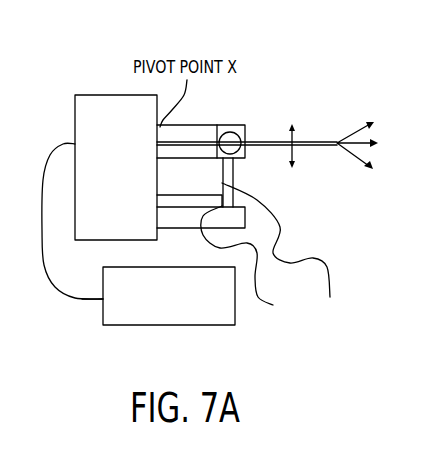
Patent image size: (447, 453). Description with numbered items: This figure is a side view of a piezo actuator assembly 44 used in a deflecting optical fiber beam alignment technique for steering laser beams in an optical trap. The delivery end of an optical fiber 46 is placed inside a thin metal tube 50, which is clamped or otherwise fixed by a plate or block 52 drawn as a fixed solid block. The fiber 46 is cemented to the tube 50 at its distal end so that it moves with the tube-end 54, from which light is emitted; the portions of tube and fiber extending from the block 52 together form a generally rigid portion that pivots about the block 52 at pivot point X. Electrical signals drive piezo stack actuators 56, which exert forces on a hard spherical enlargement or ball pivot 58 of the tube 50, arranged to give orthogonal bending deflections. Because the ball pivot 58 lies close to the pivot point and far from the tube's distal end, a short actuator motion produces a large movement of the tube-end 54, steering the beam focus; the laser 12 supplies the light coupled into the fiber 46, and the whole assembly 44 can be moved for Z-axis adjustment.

The laser 12 is at (210, 325).
The actuator assembly 44 is at (264, 41).
The optical fiber 46 is at (82, 299).
The thin metal tube 50 is at (69, 143).
The plate or block 52 is at (110, 110).
The tube-end 54 is at (337, 142).
The piezo stack actuators 56 is at (233, 168).
The hard spherical enlargement (ball pivot) 58 is at (233, 125).